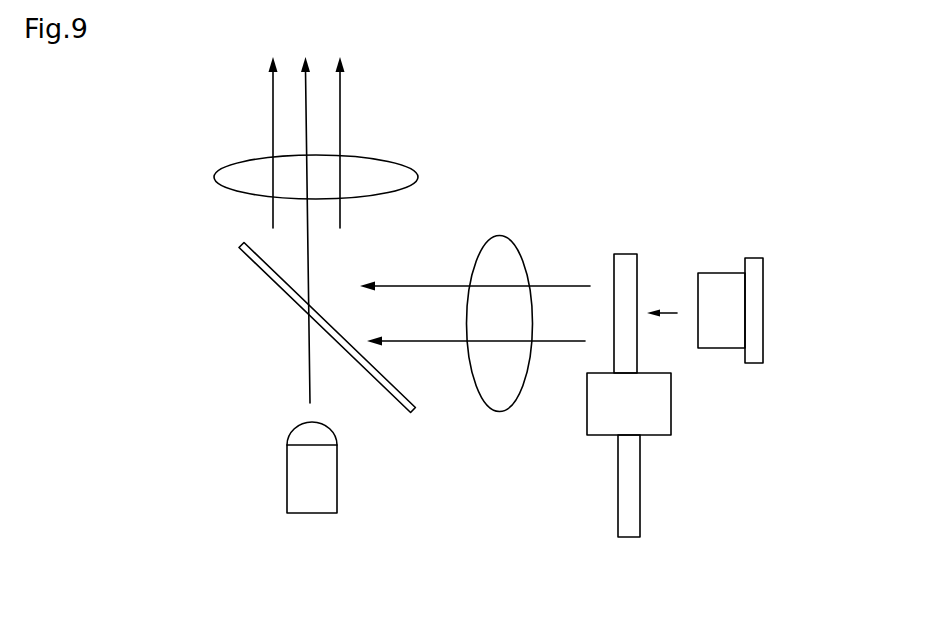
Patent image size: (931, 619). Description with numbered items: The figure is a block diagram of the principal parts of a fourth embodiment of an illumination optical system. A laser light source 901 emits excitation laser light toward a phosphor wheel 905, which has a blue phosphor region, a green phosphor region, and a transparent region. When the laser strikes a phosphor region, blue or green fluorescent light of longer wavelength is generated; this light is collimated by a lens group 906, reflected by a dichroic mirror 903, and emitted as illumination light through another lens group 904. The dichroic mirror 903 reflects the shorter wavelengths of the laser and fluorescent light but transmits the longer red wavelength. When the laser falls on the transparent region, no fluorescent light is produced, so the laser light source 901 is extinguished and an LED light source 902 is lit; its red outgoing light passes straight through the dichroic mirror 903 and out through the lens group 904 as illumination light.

The laser light source 901 is at (752, 258).
The LED light source 902 is at (287, 467).
The dichroic mirror 903 is at (241, 244).
The lens group 904 is at (388, 160).
The phosphor wheel 905 is at (620, 254).
The lens group 906 is at (502, 235).